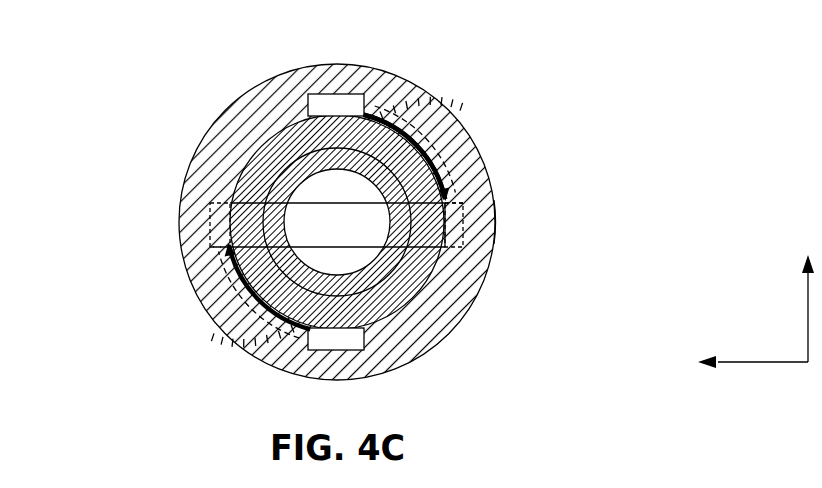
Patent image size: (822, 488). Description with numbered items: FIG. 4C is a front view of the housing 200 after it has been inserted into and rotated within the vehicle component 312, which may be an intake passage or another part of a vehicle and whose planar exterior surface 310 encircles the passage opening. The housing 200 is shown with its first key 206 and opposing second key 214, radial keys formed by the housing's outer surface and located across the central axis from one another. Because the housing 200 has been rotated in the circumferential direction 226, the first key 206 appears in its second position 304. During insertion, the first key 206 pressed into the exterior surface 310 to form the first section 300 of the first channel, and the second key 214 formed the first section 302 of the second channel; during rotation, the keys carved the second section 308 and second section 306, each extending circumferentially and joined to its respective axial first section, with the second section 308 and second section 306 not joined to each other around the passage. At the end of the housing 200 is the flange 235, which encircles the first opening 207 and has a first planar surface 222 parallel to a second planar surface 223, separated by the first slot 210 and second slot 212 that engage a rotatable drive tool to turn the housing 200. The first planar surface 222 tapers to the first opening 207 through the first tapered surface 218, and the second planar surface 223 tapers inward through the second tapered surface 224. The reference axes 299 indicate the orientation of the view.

The housing 200 is at (247, 149).
The first key 206 is at (466, 217).
The first opening 207 is at (386, 246).
The first slot 210 is at (460, 213).
The second slot 212 is at (212, 211).
The second key 214 is at (212, 223).
The first tapered surface 218 is at (287, 167).
The first planar surface 222 is at (292, 150).
The second planar surface 223 is at (404, 296).
The second tapered surface 224 is at (377, 270).
The circumferential direction 226 is at (382, 110).
The flange 235 is at (440, 147).
The reference axes 299 is at (755, 320).
The first section of first channel 300 is at (307, 95).
The first section of second channel 302 is at (366, 333).
The second position 304 is at (450, 254).
The second section of second channel 306 is at (230, 297).
The second section of first channel 308 is at (400, 112).
The exterior surface 310 is at (490, 248).
The vehicle component 312 is at (241, 97).